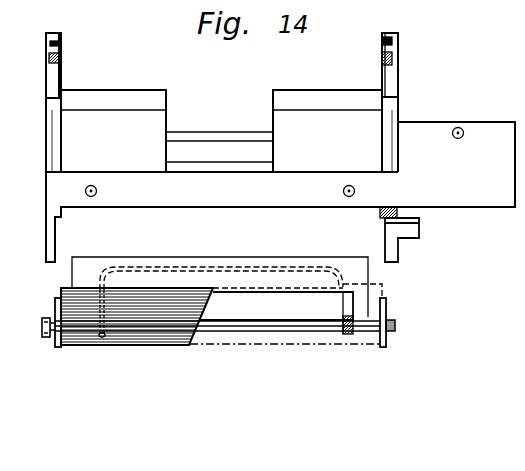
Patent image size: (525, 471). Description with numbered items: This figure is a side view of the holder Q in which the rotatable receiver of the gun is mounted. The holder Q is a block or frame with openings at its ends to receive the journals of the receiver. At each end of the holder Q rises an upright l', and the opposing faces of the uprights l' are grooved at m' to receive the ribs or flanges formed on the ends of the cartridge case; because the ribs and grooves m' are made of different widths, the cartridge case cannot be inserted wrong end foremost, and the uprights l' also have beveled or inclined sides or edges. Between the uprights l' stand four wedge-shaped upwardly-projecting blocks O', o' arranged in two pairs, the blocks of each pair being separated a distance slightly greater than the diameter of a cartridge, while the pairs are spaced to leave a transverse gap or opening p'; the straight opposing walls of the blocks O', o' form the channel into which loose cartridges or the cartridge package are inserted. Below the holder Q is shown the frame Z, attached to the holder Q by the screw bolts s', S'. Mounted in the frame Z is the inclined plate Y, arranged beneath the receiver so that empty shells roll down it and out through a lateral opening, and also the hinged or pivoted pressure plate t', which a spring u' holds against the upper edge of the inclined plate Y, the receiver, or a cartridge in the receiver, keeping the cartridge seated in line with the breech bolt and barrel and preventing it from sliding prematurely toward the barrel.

The holder Q is at (265, 147).
The uprights l' is at (222, 79).
The grooves m' is at (220, 48).
The wedge-shaped blocks O' is at (113, 123).
The wedge-shaped blocks o' is at (327, 122).
The transverse gap p' is at (219, 132).
The pressure plate t' is at (221, 302).
The inclined plate Y is at (137, 316).
The screw bolts S' is at (276, 307).
The spring u' is at (333, 313).
The screw bolts s' is at (210, 336).
The frame Z is at (215, 319).